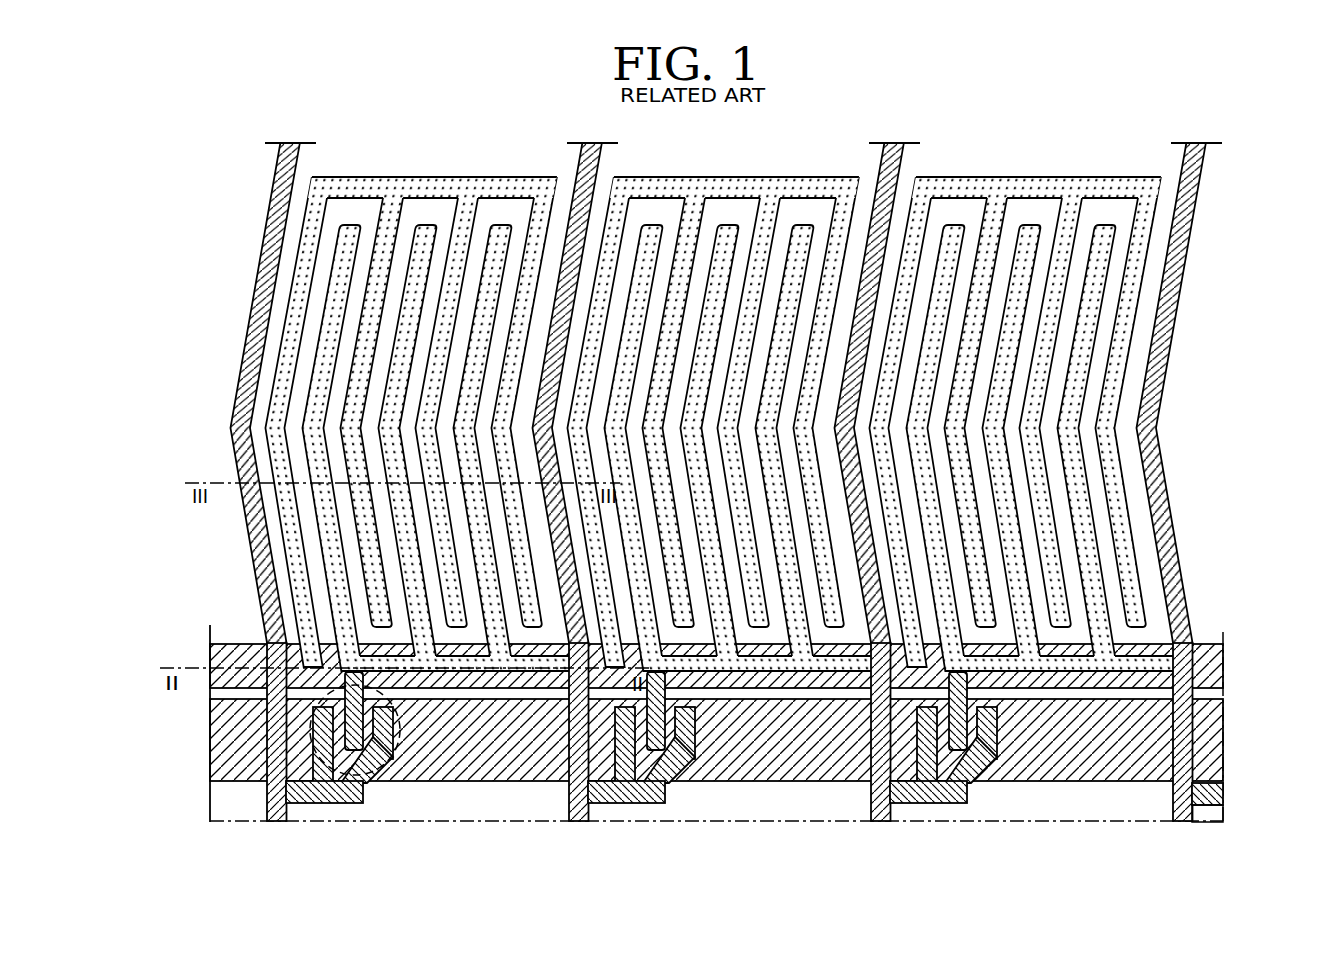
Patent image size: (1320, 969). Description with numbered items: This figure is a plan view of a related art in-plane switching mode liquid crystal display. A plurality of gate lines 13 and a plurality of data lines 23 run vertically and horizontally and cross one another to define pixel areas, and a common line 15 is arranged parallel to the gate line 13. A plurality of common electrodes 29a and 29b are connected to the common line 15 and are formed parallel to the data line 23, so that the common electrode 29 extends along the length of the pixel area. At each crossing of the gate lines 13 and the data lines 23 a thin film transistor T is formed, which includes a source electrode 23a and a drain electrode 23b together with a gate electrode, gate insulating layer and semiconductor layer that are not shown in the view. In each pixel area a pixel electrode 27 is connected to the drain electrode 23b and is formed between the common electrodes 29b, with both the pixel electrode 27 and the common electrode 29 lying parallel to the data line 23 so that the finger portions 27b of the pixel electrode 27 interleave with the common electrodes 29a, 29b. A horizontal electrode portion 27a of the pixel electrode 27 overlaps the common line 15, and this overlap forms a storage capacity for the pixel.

The gate line 13 is at (1220, 748).
The common line 15 is at (1223, 684).
The data line 23 is at (262, 568).
The source electrode 23a is at (330, 803).
The drain electrode 23b is at (374, 773).
The thin film transistor T is at (398, 757).
The pixel electrode 27 is at (371, 568).
The horizontal electrode portion 27a is at (462, 672).
The common electrode fingers 27b is at (327, 342).
The common electrode 29 is at (343, 414).
The common electrode 29a is at (353, 190).
The common electrode 29b is at (303, 267).